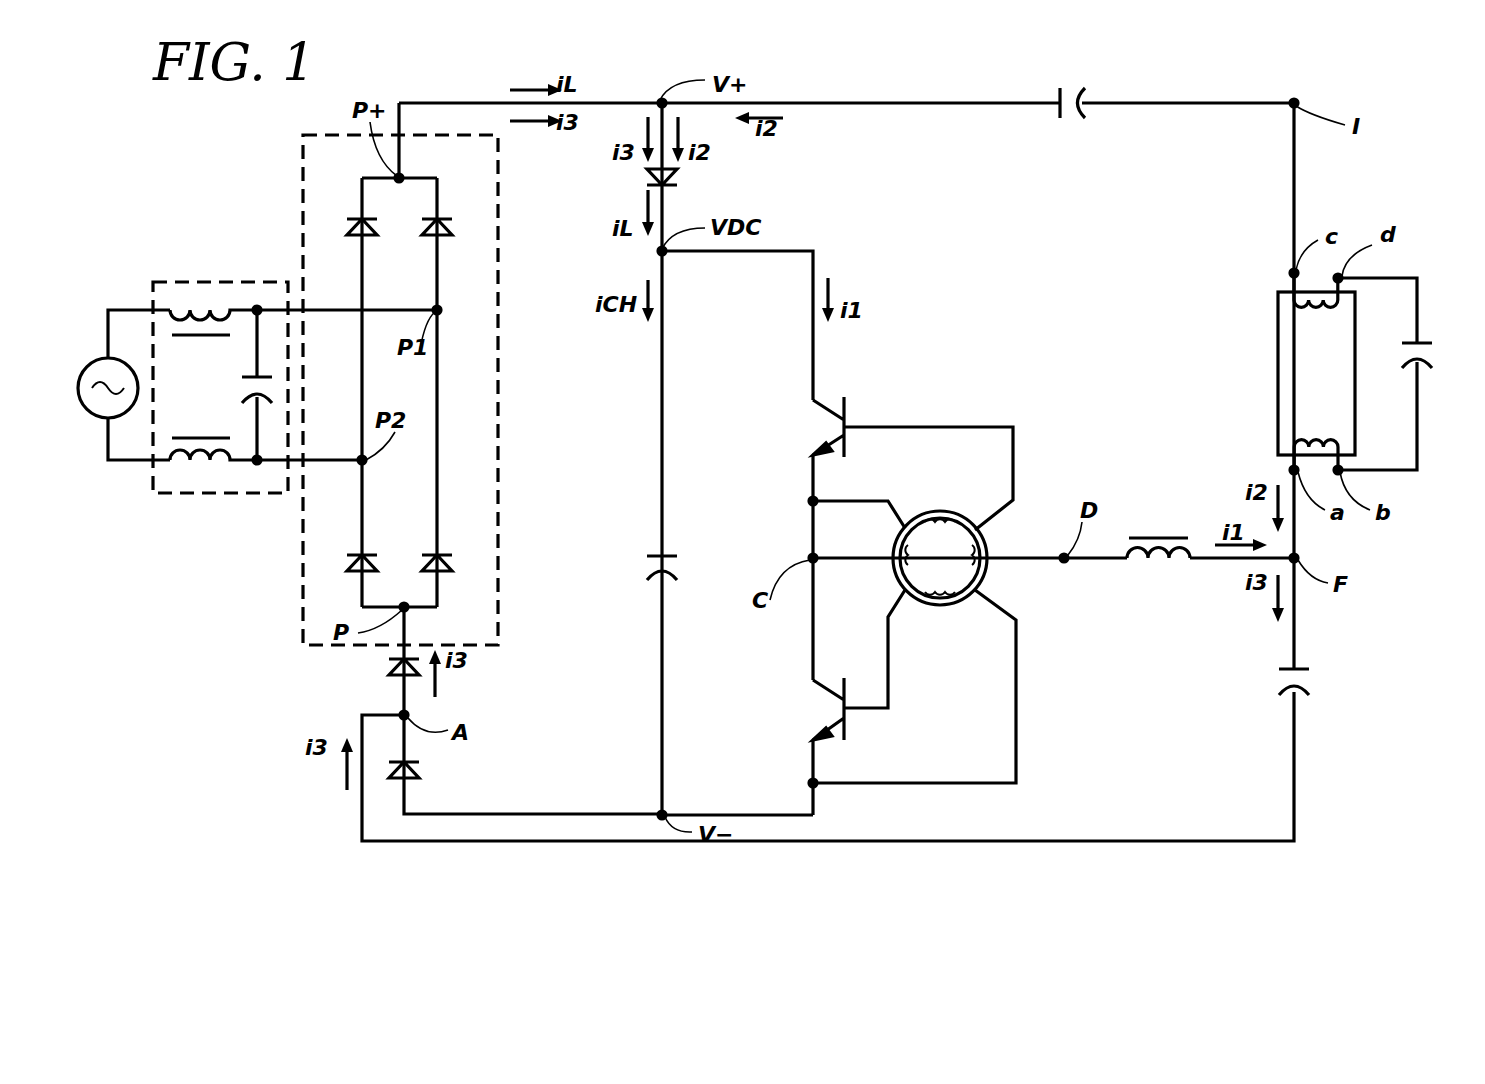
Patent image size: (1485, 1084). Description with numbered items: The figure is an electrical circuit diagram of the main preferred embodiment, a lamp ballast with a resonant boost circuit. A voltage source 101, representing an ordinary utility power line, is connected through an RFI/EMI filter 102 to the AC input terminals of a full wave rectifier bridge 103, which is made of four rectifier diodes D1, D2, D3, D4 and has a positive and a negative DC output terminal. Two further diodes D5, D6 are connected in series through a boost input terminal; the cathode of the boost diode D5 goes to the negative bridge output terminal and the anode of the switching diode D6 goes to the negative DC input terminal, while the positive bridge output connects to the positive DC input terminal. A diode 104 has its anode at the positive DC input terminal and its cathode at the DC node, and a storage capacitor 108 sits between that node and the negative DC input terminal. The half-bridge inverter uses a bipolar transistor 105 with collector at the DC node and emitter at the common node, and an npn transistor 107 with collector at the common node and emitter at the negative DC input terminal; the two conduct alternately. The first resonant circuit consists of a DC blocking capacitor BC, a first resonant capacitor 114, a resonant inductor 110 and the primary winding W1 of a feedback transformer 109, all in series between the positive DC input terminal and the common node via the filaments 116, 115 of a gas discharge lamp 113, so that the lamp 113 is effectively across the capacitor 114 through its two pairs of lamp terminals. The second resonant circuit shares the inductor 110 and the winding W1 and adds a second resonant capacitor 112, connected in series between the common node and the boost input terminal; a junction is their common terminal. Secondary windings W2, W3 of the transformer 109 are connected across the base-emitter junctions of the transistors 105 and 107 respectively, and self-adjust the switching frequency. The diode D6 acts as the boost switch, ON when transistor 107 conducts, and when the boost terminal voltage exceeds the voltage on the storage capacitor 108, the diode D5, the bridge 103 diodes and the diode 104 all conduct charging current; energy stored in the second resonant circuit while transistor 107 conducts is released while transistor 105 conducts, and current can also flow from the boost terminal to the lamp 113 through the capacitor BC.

The voltage source 101 is at (86, 370).
The RFI/EMI filter 102 is at (153, 285).
The full wave rectifier bridge 103 is at (370, 377).
The diode 104 is at (680, 176).
The bipolar transistor 105 is at (825, 400).
The npn transistor 107 is at (820, 685).
The storage capacitor 108 is at (680, 562).
The feedback transformer 109 is at (908, 552).
The resonant inductor 110 is at (1158, 540).
The second resonant capacitor 112 is at (1312, 677).
The gas discharge lamp 113 is at (1275, 371).
The first resonant capacitor 114 is at (1400, 360).
The filament 115 is at (1322, 438).
The filament 116 is at (1305, 312).
The rectifier diode D1 is at (345, 225).
The rectifier diode D2 is at (456, 225).
The rectifier diode D3 is at (378, 564).
The rectifier diode D4 is at (455, 564).
The boost diode D5 is at (388, 668).
The switching diode D6 is at (420, 772).
The primary winding W1 is at (939, 550).
The secondary winding W2 is at (942, 520).
The secondary winding W3 is at (960, 605).
The DC blocking capacitor BC is at (1070, 120).